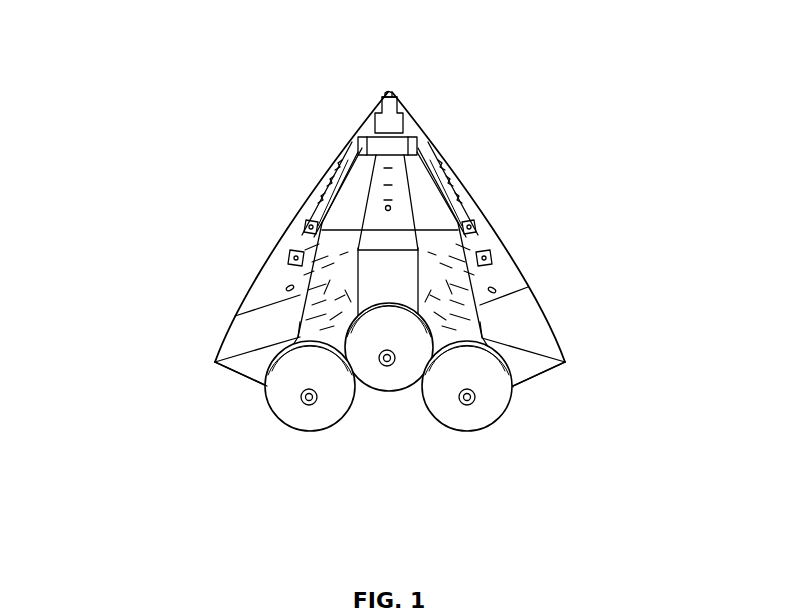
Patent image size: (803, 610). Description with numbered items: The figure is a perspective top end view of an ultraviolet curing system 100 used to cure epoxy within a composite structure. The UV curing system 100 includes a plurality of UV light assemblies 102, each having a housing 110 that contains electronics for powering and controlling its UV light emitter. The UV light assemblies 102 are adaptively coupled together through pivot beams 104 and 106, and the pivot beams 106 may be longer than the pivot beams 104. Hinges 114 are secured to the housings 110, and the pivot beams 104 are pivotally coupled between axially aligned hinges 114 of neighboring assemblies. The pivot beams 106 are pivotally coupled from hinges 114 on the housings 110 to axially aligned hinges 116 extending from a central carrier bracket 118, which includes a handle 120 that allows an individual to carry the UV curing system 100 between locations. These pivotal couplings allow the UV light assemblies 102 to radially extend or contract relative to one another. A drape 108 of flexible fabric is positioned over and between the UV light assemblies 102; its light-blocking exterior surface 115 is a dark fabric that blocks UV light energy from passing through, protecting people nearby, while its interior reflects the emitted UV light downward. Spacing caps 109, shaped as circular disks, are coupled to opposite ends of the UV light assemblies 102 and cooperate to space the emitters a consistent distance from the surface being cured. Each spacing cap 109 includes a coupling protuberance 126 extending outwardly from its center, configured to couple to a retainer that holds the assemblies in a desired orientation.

The ultraviolet curing system 100 is at (181, 140).
The UV light assembly 102 is at (260, 280).
The pivot beam 104 is at (272, 270).
The pivot beam 106 is at (336, 172).
The drape 108 is at (332, 326).
The spacing cap 109 is at (300, 417).
The housing 110 is at (365, 130).
The hinge 114 is at (340, 157).
The light-blocking exterior surface 115 is at (256, 338).
The hinge 116 is at (360, 135).
The carrier bracket 118 is at (391, 89).
The handle 120 is at (388, 90).
The coupling protuberance 126 is at (310, 405).